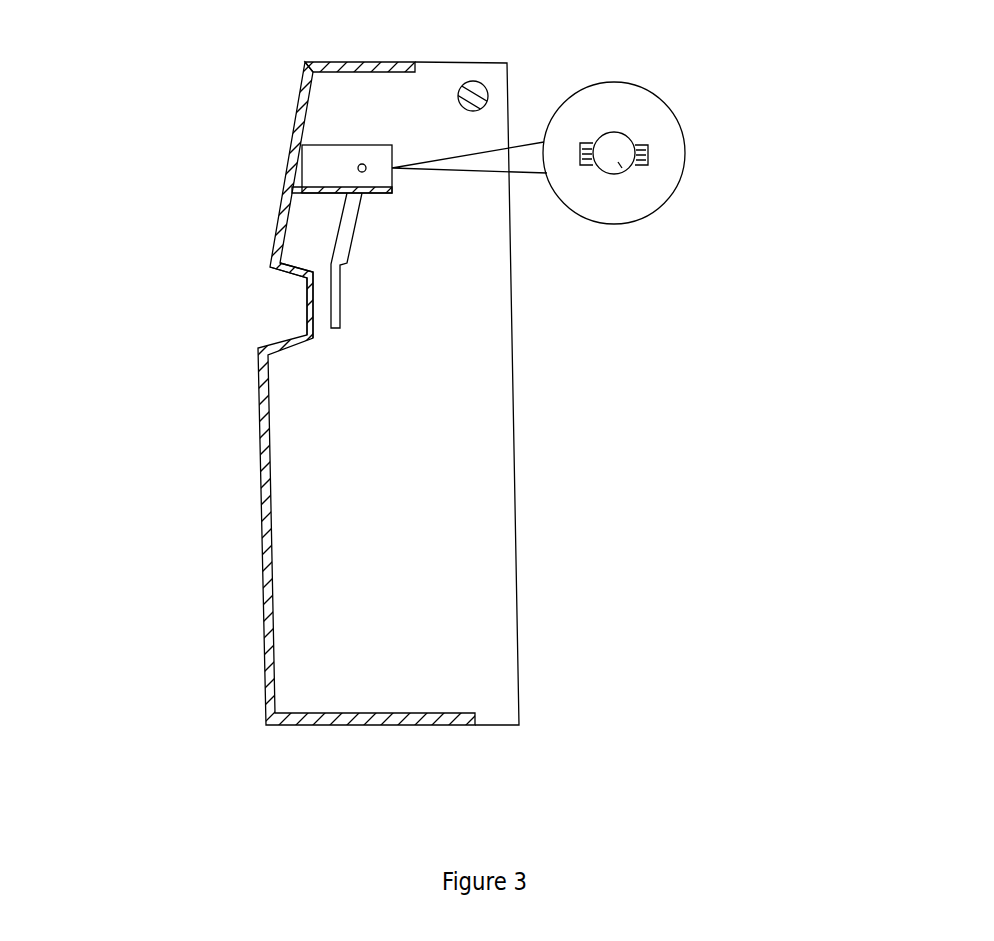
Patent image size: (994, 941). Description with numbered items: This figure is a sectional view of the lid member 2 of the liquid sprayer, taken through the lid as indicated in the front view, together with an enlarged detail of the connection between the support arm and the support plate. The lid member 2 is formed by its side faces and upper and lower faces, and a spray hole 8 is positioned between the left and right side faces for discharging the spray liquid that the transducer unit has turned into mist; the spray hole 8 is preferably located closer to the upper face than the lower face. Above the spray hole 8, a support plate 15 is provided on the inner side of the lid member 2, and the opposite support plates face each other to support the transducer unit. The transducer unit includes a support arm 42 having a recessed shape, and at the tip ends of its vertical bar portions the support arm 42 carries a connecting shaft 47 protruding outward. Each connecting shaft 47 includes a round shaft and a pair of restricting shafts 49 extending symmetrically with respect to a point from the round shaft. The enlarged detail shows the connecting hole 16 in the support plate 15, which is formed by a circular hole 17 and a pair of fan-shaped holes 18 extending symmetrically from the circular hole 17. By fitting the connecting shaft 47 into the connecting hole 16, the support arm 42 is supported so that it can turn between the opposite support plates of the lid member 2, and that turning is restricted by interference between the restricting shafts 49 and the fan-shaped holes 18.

The lid member 2 is at (500, 523).
The support plate 15 is at (310, 170).
The support arm 42 is at (331, 249).
The spray hole 8 is at (278, 310).
The connecting hole 16 is at (608, 129).
The circular hole 17 is at (627, 122).
The fan-shaped hole 18 is at (645, 143).
The restricting shaft 49 is at (642, 162).
The connecting shaft 47 is at (622, 168).